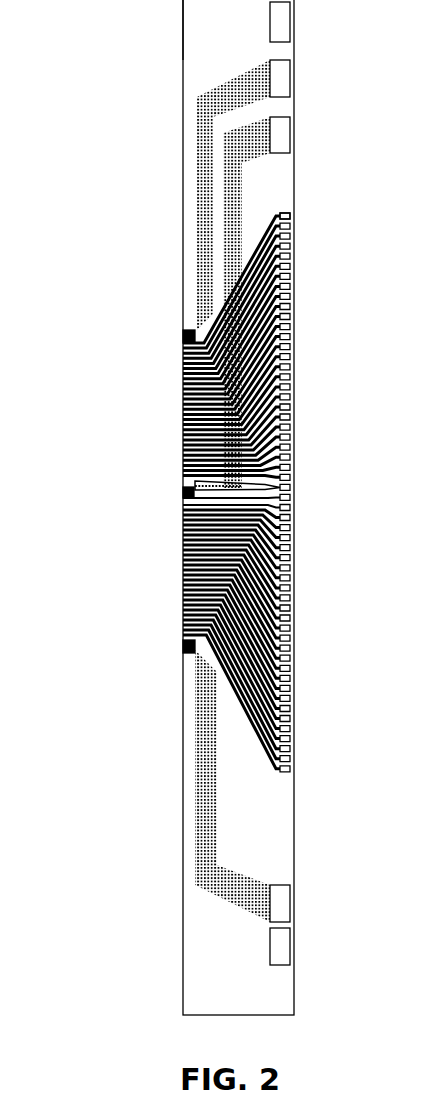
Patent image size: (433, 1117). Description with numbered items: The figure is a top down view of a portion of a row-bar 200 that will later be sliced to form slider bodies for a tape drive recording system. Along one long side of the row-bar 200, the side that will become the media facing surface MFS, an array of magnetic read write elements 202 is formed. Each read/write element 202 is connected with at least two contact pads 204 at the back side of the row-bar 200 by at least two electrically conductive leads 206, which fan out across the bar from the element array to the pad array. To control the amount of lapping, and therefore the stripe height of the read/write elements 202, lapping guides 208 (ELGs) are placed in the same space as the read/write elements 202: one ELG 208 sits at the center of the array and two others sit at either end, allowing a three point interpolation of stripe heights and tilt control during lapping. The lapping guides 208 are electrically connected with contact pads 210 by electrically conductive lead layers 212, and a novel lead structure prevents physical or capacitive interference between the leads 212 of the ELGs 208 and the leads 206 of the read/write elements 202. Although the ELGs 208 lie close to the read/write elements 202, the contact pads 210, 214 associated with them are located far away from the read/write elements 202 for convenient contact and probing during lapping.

The row-bar 200 is at (183, 783).
The media facing surface MFS is at (183, 28).
The magnetic read write elements 202 is at (183, 550).
The contact pads 204 is at (293, 535).
The electrically conductive leads 206 is at (265, 223).
The lapping guides 208 is at (183, 337).
The contact pads 210 is at (283, 80).
The electrically conductive lead layers 212 is at (280, 100).
The contact pads 214 is at (282, 23).